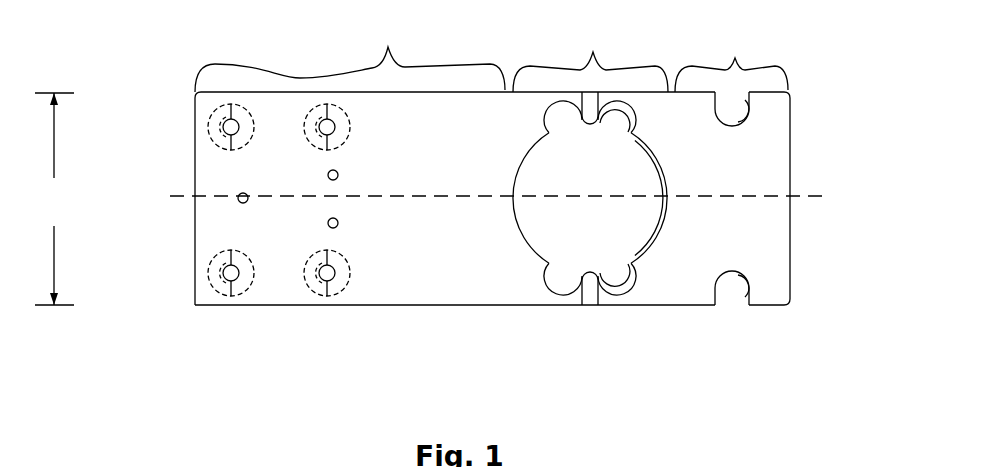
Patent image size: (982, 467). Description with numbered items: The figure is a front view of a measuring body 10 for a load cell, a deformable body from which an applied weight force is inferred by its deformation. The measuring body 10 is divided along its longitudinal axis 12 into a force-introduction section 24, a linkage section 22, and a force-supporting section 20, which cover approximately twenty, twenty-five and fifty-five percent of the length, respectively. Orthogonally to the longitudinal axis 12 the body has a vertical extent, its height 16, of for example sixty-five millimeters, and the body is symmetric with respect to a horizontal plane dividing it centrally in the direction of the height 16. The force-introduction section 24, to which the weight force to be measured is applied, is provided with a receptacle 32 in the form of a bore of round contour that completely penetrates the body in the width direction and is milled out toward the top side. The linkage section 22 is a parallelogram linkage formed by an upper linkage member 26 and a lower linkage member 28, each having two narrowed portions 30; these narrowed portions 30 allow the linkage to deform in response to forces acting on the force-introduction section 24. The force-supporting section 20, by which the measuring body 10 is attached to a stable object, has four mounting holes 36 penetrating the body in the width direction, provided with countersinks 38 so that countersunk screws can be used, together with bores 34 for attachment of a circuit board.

The measuring body 10 is at (437, 255).
The longitudinal axis 12 is at (520, 196).
The height 16 is at (51, 199).
The force-supporting section 20 is at (350, 53).
The linkage section 22 is at (590, 56).
The force-introduction section 24 is at (731, 57).
The upper linkage member 26 is at (589, 110).
The lower linkage member 28 is at (590, 292).
The narrowed portions 30 is at (544, 105).
The receptacle 32 is at (770, 54).
The bores for attachment of a circuit board 34 is at (338, 176).
The mounting holes 36 is at (225, 128).
The countersinks 38 is at (222, 141).